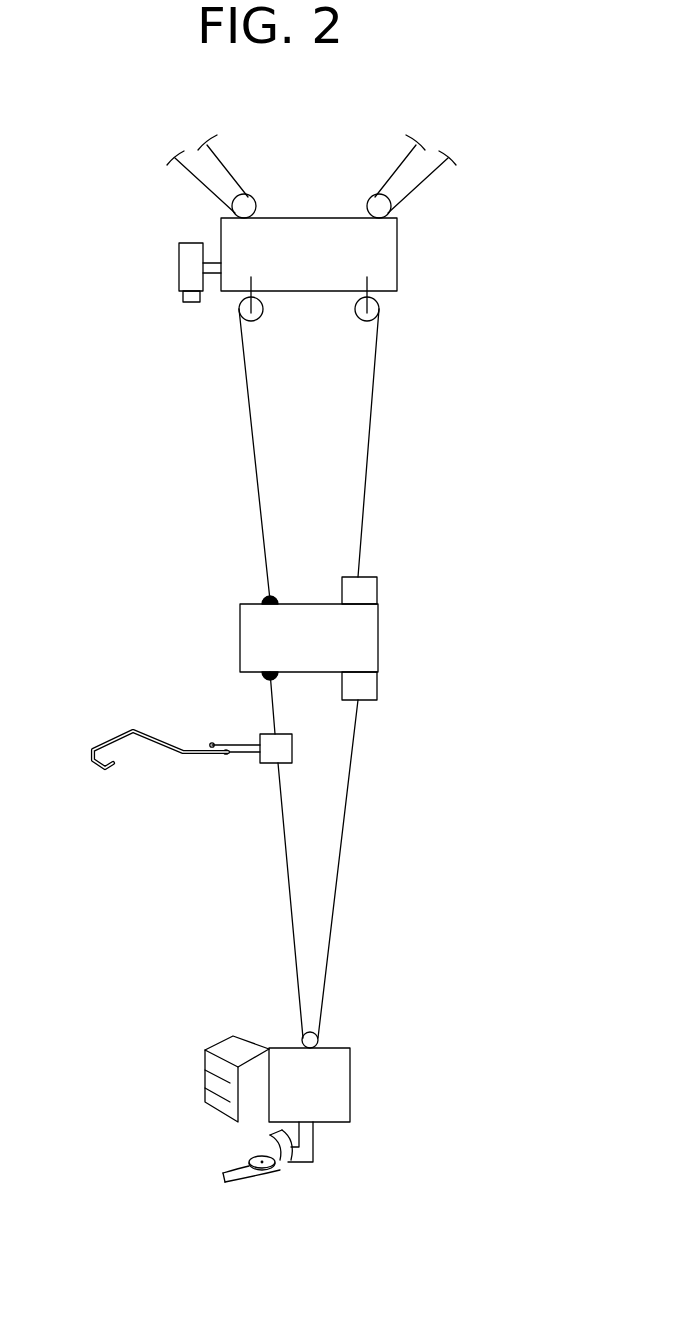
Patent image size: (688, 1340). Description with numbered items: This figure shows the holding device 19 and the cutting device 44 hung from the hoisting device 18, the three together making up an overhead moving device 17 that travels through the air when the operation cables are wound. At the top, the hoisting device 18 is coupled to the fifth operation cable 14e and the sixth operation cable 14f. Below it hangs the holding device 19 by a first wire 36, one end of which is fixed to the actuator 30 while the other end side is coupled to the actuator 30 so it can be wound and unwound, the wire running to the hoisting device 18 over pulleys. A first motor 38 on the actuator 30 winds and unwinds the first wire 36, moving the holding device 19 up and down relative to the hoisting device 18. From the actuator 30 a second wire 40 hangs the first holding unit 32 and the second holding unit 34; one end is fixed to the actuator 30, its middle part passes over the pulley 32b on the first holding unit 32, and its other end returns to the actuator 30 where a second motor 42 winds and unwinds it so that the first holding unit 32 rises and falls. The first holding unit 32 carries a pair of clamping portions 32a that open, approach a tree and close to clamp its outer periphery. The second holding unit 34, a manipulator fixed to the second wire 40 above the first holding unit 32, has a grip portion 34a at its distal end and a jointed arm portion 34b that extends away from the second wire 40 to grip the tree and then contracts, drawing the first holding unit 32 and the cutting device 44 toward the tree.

The fifth operation cable 14e is at (222, 163).
The sixth operation cable 14f is at (397, 160).
The hoisting device 18 is at (383, 248).
The first wire 36 is at (375, 397).
The holding device 19 is at (319, 605).
The actuator 30 is at (240, 643).
The first motor 38 is at (372, 575).
The second motor 42 is at (397, 681).
The second wire 40 is at (343, 827).
The second holding unit 34 is at (270, 734).
The grip portion 34a is at (128, 730).
The arm portion 34b is at (240, 754).
The first holding unit 32 is at (335, 1092).
The clamping portions 32a is at (235, 1050).
The pulley 32b is at (318, 1043).
The cutting device 44 is at (284, 1169).
The overhead moving device 17 is at (327, 1333).